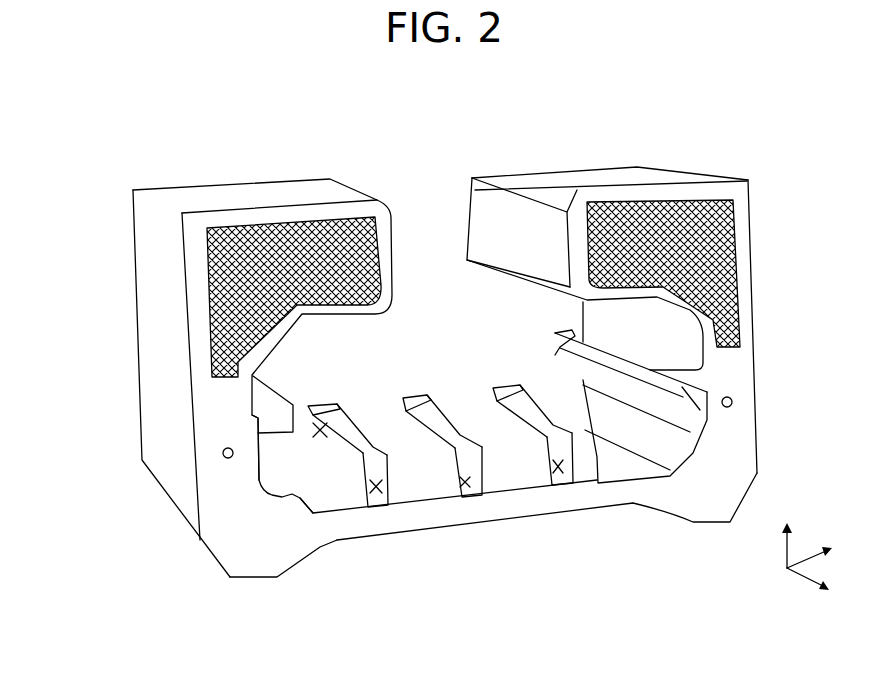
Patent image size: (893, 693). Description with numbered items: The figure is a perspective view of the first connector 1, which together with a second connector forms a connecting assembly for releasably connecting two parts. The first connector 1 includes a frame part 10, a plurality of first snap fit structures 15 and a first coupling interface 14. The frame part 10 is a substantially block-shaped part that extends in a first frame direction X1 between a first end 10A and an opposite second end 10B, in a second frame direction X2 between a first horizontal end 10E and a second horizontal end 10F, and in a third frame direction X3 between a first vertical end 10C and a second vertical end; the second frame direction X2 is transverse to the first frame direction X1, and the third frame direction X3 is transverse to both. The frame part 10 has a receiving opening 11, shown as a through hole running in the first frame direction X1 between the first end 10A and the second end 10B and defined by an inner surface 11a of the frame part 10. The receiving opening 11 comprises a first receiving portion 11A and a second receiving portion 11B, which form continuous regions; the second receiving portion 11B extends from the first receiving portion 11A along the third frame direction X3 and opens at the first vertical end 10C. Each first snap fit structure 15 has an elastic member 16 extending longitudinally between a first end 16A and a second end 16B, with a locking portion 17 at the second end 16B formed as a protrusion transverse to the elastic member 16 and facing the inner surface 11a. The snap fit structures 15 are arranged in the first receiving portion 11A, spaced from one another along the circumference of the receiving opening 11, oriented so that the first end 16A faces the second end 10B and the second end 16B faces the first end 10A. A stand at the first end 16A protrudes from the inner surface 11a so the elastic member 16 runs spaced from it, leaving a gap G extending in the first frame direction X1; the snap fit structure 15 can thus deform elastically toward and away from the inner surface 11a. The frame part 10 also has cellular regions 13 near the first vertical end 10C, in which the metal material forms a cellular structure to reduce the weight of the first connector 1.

The first connector 1 is at (152, 127).
The frame part 10 is at (139, 288).
The first end 10A is at (580, 314).
The second end 10B is at (673, 500).
The first vertical end 10C is at (240, 197).
The first horizontal end 10E is at (163, 337).
The second horizontal end 10F is at (755, 278).
The receiving opening 11 is at (313, 513).
The first receiving portion 11A is at (250, 463).
The second receiving portion 11B is at (472, 221).
The inner surface 11a is at (412, 446).
The cellular regions 13 is at (228, 250).
The first coupling interface 14 is at (221, 453).
The first snap fit structure 15 is at (461, 453).
The elastic member 16 is at (257, 377).
The first end 16A is at (380, 487).
The second end 16B is at (320, 407).
The locking portion 17 is at (307, 437).
The gap G is at (440, 447).
The first frame direction X1 is at (807, 586).
The second frame direction X2 is at (810, 558).
The third frame direction X3 is at (787, 552).